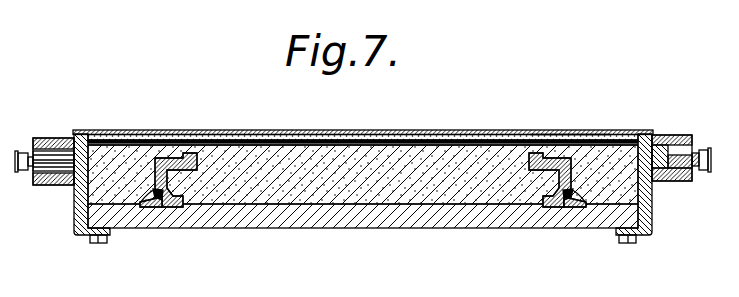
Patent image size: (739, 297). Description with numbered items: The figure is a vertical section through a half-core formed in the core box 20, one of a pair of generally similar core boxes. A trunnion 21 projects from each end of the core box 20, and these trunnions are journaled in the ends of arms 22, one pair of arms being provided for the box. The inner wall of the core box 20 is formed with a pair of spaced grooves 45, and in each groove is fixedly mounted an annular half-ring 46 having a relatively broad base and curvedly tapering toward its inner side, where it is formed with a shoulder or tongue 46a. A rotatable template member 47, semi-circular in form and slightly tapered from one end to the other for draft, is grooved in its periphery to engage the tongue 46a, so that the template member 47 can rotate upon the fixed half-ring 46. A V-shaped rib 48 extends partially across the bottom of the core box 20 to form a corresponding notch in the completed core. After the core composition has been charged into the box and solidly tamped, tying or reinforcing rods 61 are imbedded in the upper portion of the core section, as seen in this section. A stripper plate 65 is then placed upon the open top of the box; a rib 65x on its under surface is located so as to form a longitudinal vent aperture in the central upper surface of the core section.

The core box 20 is at (326, 218).
The trunnion 21 is at (37, 174).
The arm 22 is at (55, 184).
The groove 45 is at (563, 207).
The annular half-ring 46 is at (153, 212).
The shoulder or tongue 46a is at (157, 207).
The template member 47 is at (173, 154).
The V-shaped rib 48 is at (116, 207).
The tying or reinforcing rod 61 is at (425, 143).
The stripper plate 65 is at (331, 130).
The rib 65x is at (553, 133).